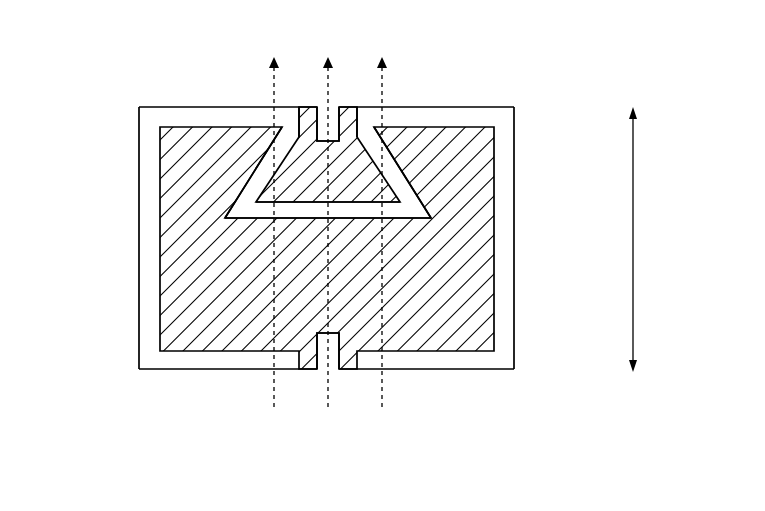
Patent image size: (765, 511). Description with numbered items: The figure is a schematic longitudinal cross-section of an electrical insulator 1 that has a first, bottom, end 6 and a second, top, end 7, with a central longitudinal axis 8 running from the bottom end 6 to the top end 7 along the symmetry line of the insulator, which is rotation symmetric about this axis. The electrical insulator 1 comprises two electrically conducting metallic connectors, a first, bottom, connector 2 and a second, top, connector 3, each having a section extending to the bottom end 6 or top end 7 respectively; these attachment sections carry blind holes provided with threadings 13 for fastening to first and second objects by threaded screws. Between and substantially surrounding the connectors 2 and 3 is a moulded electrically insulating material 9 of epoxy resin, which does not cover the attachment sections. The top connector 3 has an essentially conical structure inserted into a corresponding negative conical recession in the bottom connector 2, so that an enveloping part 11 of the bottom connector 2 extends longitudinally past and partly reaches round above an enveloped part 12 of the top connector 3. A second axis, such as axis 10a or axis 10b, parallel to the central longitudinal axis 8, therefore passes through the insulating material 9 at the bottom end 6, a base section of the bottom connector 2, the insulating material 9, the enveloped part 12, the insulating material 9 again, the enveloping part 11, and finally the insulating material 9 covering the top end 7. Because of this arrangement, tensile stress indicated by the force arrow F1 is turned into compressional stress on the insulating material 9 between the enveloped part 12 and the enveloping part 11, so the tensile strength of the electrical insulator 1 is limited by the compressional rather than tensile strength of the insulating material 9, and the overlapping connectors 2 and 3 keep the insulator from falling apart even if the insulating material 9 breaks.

The electrical insulator 1 is at (519, 48).
The first, bottom, connector 2 is at (480, 295).
The second, top, connector 3 is at (376, 162).
The first, bottom, end 6 is at (437, 370).
The second, top, end 7 is at (183, 106).
The central longitudinal axis 8 is at (325, 249).
The electrically insulating material 9 is at (147, 231).
The second axis 10a is at (269, 249).
The second axis 10b is at (377, 249).
The enveloping part of the bottom connector 11 is at (280, 127).
The enveloped part of the top connector 12 is at (264, 196).
The threadings 13 is at (320, 107).
The force arrow F1 is at (647, 239).